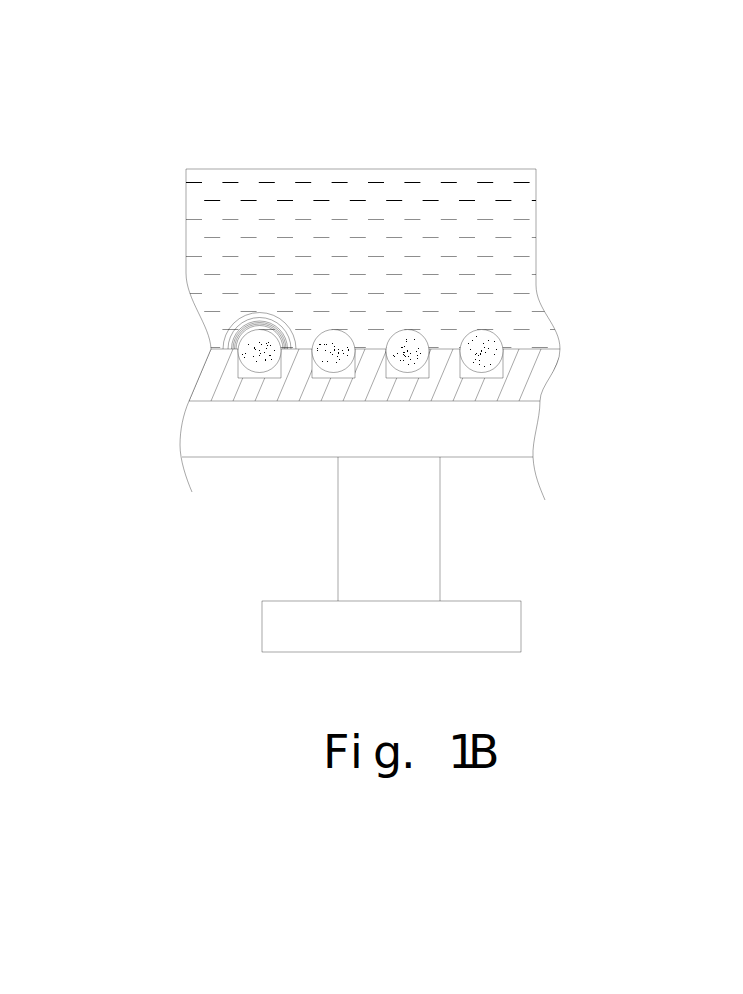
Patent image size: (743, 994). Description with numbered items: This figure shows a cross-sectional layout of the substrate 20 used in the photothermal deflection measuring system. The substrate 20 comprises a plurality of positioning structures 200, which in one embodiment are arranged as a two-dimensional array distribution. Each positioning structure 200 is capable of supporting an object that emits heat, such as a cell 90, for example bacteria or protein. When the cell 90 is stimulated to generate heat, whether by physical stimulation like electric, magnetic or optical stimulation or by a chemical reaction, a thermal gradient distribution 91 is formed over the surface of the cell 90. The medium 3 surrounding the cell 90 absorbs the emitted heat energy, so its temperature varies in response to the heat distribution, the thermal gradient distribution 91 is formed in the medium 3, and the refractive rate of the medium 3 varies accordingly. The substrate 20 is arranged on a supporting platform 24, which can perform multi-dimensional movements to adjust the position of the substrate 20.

The medium 3 is at (225, 153).
The substrate 20 is at (542, 373).
The positioning structure 200 is at (213, 385).
The cell 90 is at (334, 342).
The thermal gradient distribution 91 is at (240, 297).
The supporting platform 24 is at (430, 518).